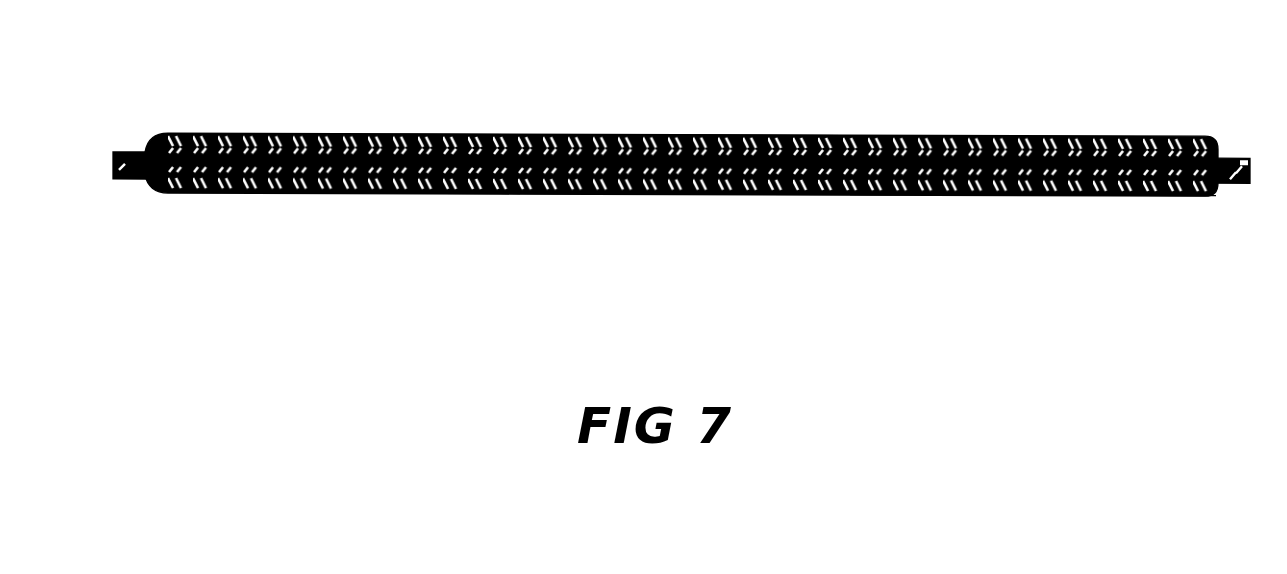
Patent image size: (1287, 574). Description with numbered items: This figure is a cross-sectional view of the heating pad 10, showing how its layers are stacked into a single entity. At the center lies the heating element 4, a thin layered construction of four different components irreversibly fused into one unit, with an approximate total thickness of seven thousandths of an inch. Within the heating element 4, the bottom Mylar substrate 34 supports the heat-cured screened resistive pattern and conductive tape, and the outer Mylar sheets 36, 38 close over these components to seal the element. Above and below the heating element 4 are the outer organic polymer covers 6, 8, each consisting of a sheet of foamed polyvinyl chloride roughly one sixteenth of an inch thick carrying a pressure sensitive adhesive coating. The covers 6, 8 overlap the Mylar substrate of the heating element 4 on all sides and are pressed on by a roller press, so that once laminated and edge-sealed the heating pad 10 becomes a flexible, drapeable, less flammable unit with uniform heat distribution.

The heating pad 10 is at (326, 121).
The heating element 4 is at (415, 203).
The outer organic polymer cover 6 is at (893, 134).
The outer organic polymer cover 8 is at (1115, 196).
The bottom Mylar substrate 34 is at (708, 178).
The outer Mylar sheet 36 is at (1000, 176).
The outer Mylar sheet 38 is at (567, 146).